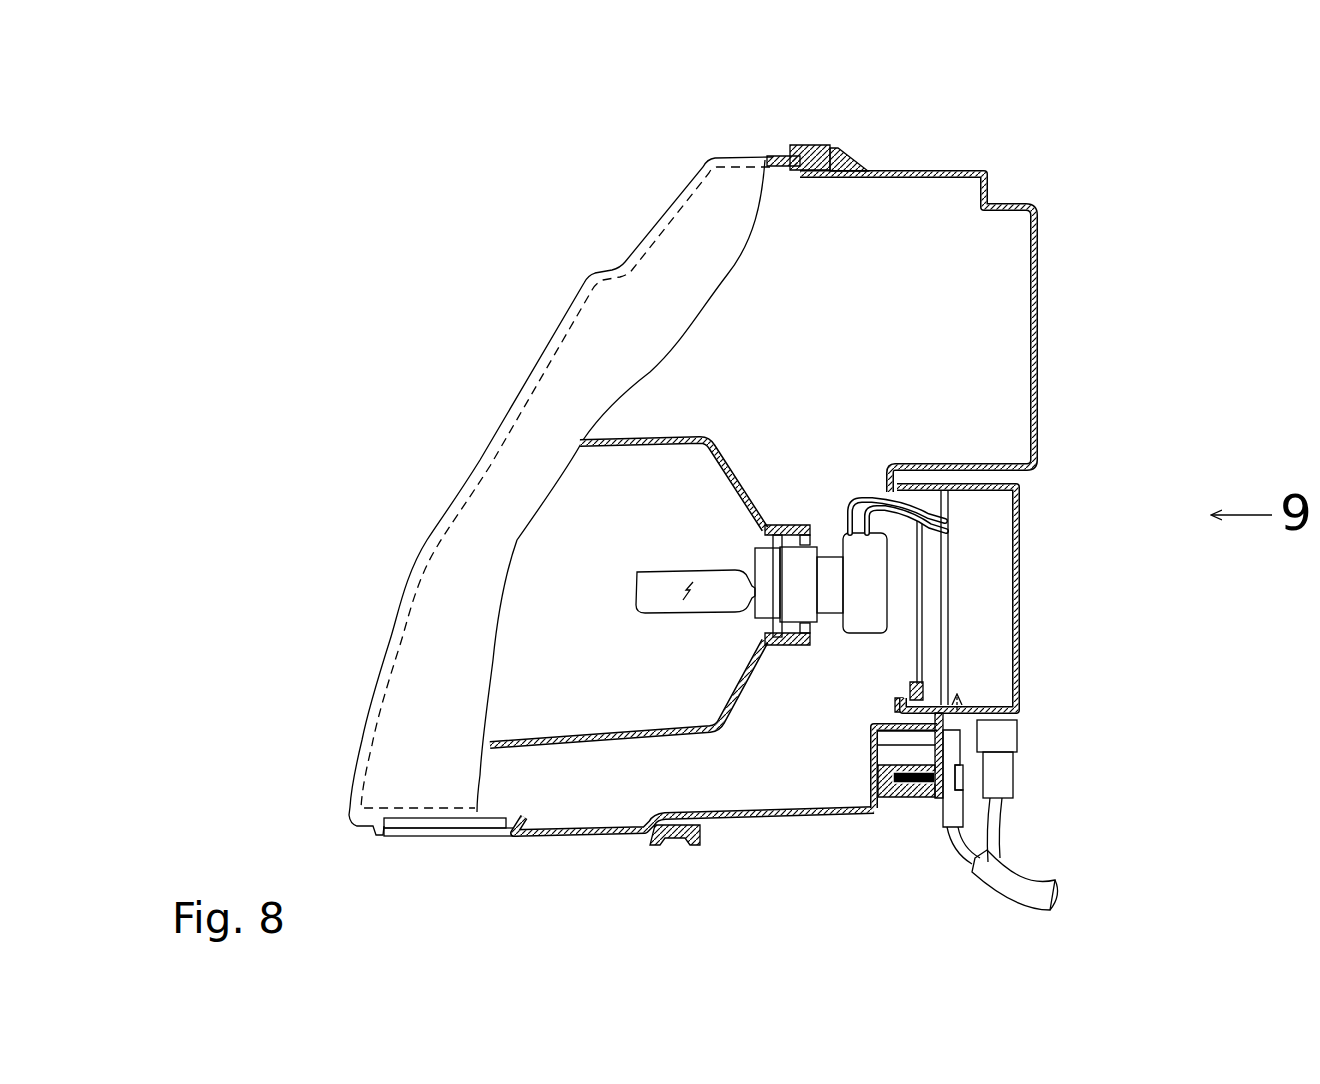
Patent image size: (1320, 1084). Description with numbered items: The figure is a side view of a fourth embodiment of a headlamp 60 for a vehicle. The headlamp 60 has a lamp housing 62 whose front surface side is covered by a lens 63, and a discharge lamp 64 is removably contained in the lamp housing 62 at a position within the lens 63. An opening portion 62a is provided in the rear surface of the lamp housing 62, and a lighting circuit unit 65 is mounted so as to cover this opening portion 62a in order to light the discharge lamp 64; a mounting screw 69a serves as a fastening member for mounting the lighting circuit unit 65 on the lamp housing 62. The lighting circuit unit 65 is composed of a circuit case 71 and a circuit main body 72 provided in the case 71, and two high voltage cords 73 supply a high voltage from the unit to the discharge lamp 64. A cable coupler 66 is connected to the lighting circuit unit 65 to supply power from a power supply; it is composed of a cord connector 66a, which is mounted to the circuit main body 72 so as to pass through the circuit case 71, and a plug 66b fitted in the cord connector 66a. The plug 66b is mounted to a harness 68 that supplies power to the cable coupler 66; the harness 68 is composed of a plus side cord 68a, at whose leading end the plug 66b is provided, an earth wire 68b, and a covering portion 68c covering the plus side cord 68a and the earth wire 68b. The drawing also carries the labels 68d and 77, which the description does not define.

The headlamp 60 is at (403, 214).
The lamp housing 62 is at (1038, 283).
The opening portion 62a is at (912, 688).
The lens 63 is at (480, 458).
The discharge lamp 64 is at (668, 568).
The lighting circuit unit 65 is at (1038, 543).
The cable coupler 66 is at (870, 750).
The cord connector 66a is at (1015, 730).
The plug 66b is at (965, 770).
The harness 68 is at (1040, 877).
The plus side cord 68a is at (1005, 818).
The earth wire 68b is at (962, 840).
The covering portion 68c is at (985, 885).
The plug 68d is at (943, 812).
The mounting screw 69a is at (1013, 797).
The circuit case 71 is at (1024, 657).
The circuit main body 72 is at (990, 604).
The high voltage cord 73 is at (850, 520).
The lead wires 77 is at (915, 490).